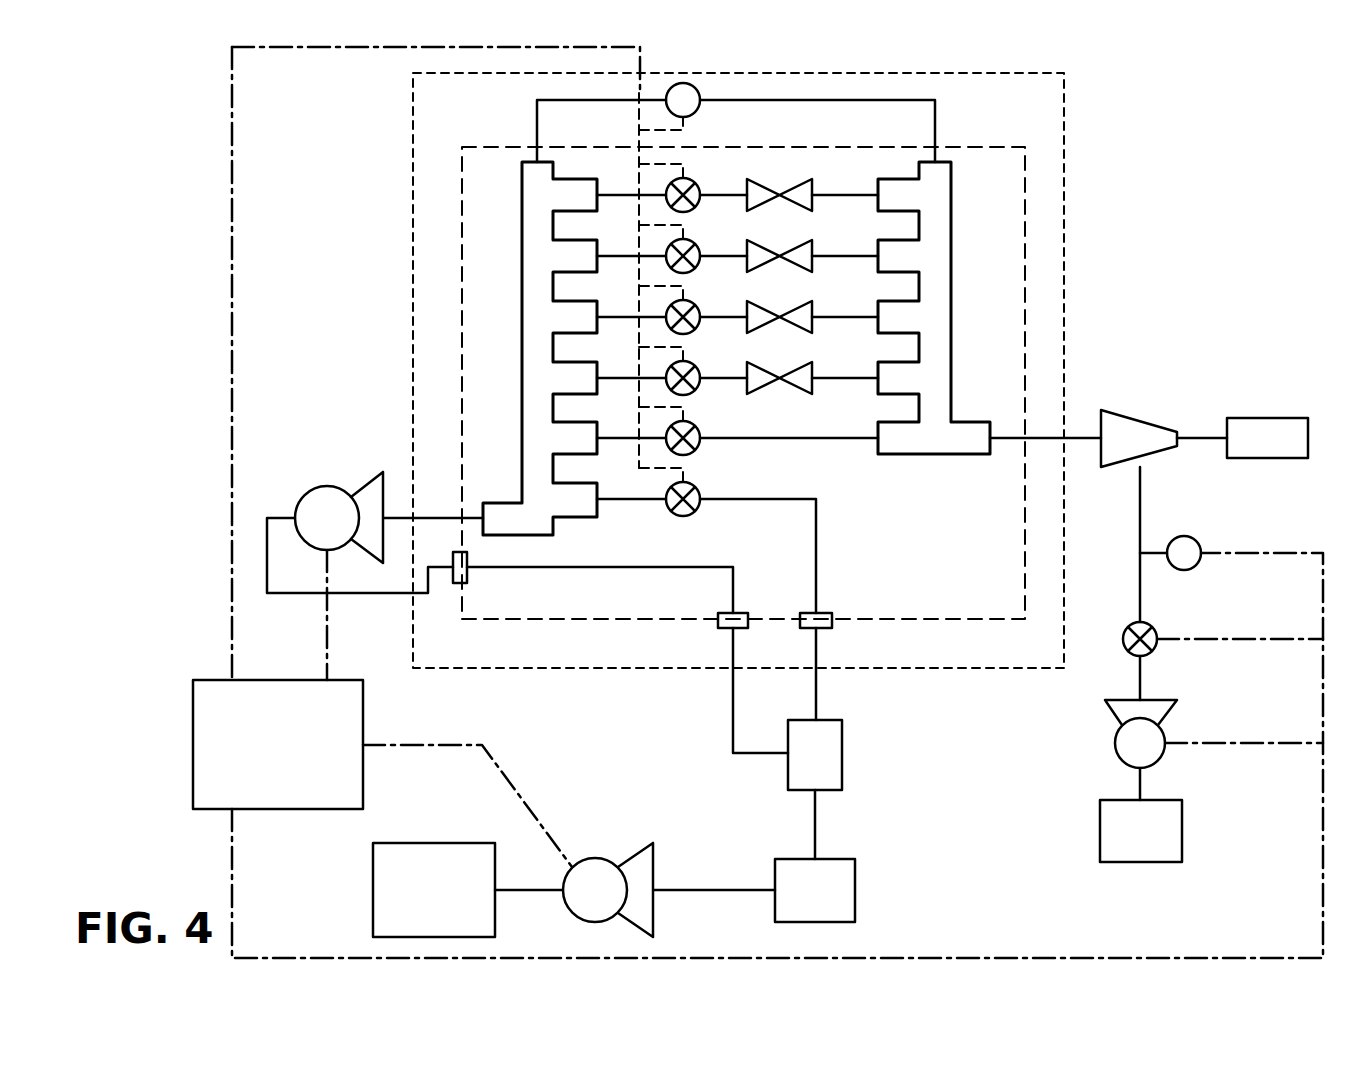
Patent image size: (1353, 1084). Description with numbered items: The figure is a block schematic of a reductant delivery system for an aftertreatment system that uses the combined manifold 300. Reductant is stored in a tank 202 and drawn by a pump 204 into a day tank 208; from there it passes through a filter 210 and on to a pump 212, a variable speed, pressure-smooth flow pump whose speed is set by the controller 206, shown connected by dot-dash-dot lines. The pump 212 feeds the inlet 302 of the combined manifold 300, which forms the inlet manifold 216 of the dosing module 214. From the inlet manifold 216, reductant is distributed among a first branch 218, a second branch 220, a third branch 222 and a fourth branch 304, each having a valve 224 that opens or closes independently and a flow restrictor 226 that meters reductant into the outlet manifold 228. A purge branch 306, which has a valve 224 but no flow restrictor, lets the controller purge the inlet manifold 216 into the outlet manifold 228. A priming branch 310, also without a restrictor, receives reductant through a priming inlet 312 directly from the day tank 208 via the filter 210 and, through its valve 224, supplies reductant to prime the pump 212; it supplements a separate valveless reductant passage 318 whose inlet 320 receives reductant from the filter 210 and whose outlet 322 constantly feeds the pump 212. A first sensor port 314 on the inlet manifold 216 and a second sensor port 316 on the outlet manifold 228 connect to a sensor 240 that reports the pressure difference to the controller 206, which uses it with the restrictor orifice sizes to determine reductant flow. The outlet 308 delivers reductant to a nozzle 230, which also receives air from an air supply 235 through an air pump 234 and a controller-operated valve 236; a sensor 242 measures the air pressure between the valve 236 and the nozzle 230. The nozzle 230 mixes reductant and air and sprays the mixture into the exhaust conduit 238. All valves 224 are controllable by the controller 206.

The tank 202 is at (437, 843).
The pump 204 is at (600, 858).
The controller 206 is at (193, 710).
The day tank 208 is at (855, 883).
The filter 210 is at (842, 752).
The pump 212 is at (318, 488).
The dosing module 214 is at (1064, 108).
The inlet manifold 216 is at (497, 238).
The first branch 218 is at (816, 204).
The second branch 220 is at (816, 265).
The third branch 222 is at (816, 326).
The valve 224 is at (694, 181).
The flow restrictor 226 is at (793, 179).
The outlet manifold 228 is at (978, 198).
The nozzle 230 is at (1135, 412).
The air pump 234 is at (1166, 735).
The air supply 235 is at (1182, 820).
The valve 236 is at (1157, 632).
The exhaust conduit 238 is at (1263, 418).
The sensor 240 is at (700, 92).
The sensor 242 is at (1190, 538).
The combined manifold 300 is at (503, 147).
The inlet 302 is at (483, 500).
The fourth branch 304 is at (816, 387).
The purge branch 306 is at (822, 448).
The outlet 308 is at (990, 457).
The priming branch 310 is at (828, 510).
The priming inlet 312 is at (832, 624).
The first sensor port 314 is at (548, 163).
The second sensor port 316 is at (945, 162).
The reductant passage 318 is at (688, 558).
The inlet 320 is at (718, 623).
The outlet 322 is at (467, 577).